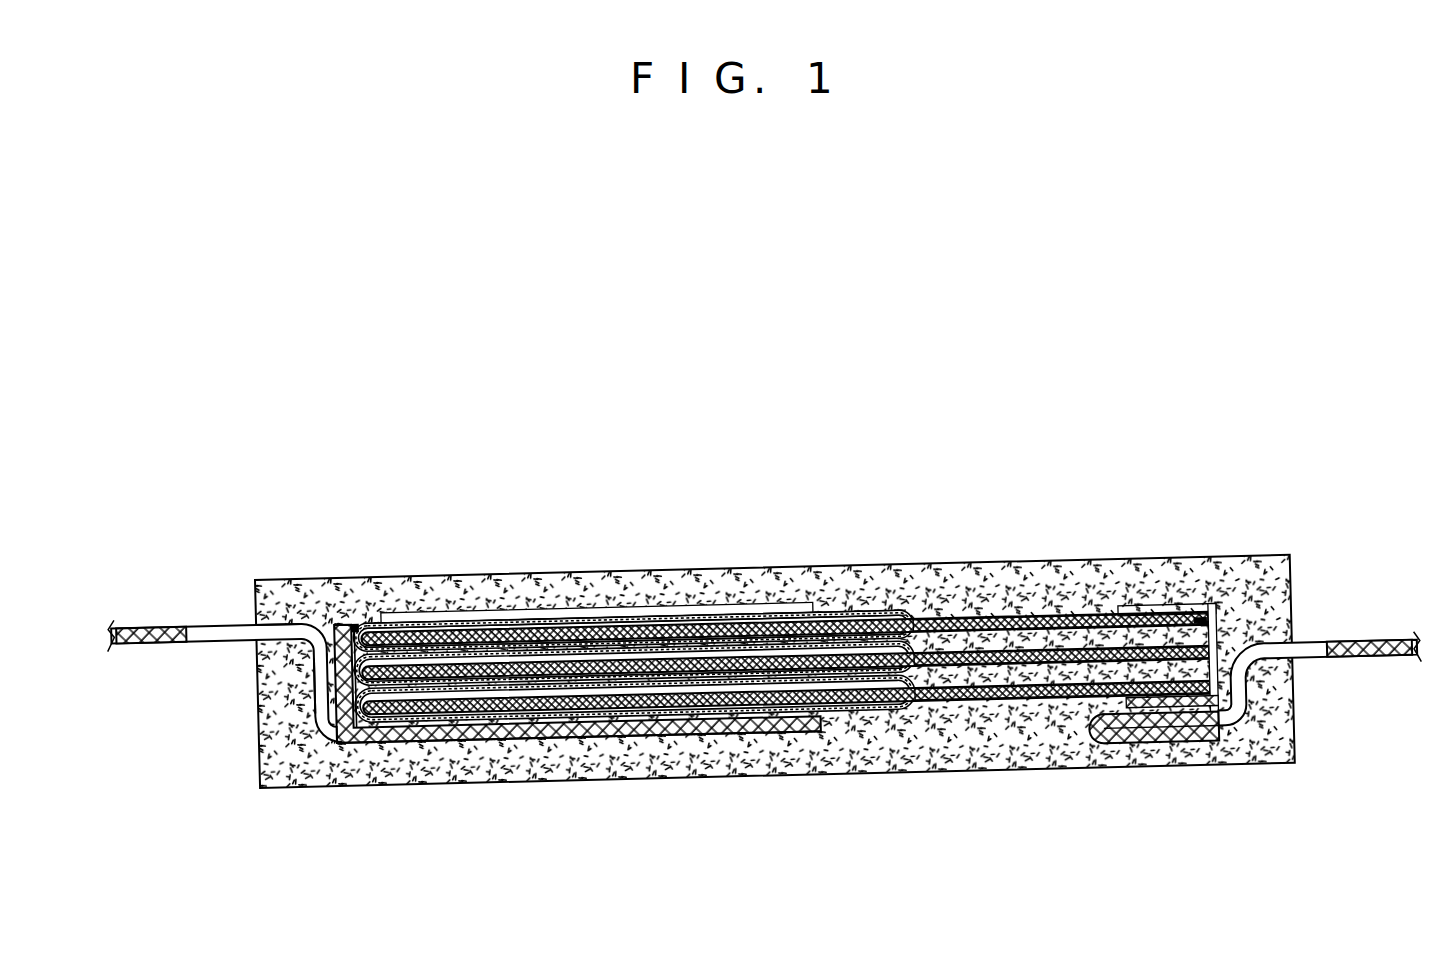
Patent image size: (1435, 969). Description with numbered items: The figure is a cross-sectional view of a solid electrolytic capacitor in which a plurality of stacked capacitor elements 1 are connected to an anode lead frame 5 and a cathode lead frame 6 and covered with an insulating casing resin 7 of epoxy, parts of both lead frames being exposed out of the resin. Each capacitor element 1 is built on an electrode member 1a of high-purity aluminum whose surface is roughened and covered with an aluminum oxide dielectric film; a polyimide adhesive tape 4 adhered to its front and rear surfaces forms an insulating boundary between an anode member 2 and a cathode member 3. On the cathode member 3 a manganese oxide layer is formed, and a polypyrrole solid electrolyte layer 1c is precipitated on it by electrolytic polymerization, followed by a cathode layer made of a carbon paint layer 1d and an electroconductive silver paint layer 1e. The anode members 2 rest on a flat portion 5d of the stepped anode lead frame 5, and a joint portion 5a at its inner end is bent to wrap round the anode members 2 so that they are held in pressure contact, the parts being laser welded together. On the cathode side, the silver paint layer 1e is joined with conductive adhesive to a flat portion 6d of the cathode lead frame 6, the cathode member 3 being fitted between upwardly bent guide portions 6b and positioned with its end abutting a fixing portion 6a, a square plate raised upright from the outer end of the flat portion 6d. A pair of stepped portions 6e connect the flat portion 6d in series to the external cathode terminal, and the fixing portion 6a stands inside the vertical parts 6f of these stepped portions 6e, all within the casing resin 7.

The capacitor element 1 is at (781, 529).
The electrode member 1a is at (1212, 650).
The solid electrolyte layer 1c is at (655, 617).
The carbon paint layer 1d is at (655, 617).
The electroconductive silver paint layer 1e is at (455, 622).
The anode member 2 is at (1070, 628).
The cathode member 3 is at (803, 618).
The polyimide adhesive tape 4 is at (1061, 572).
The anode lead frame 5 is at (1365, 657).
The joint portion 5a is at (1165, 603).
The flat portion 5d is at (1150, 740).
The cathode lead frame 6 is at (180, 627).
The fixing portion 6a is at (340, 628).
The guide portions 6b is at (540, 600).
The flat portion 6d is at (550, 745).
The stepped portions 6e is at (270, 632).
The vertical parts 6f is at (310, 687).
The insulating casing resin 7 is at (1245, 570).